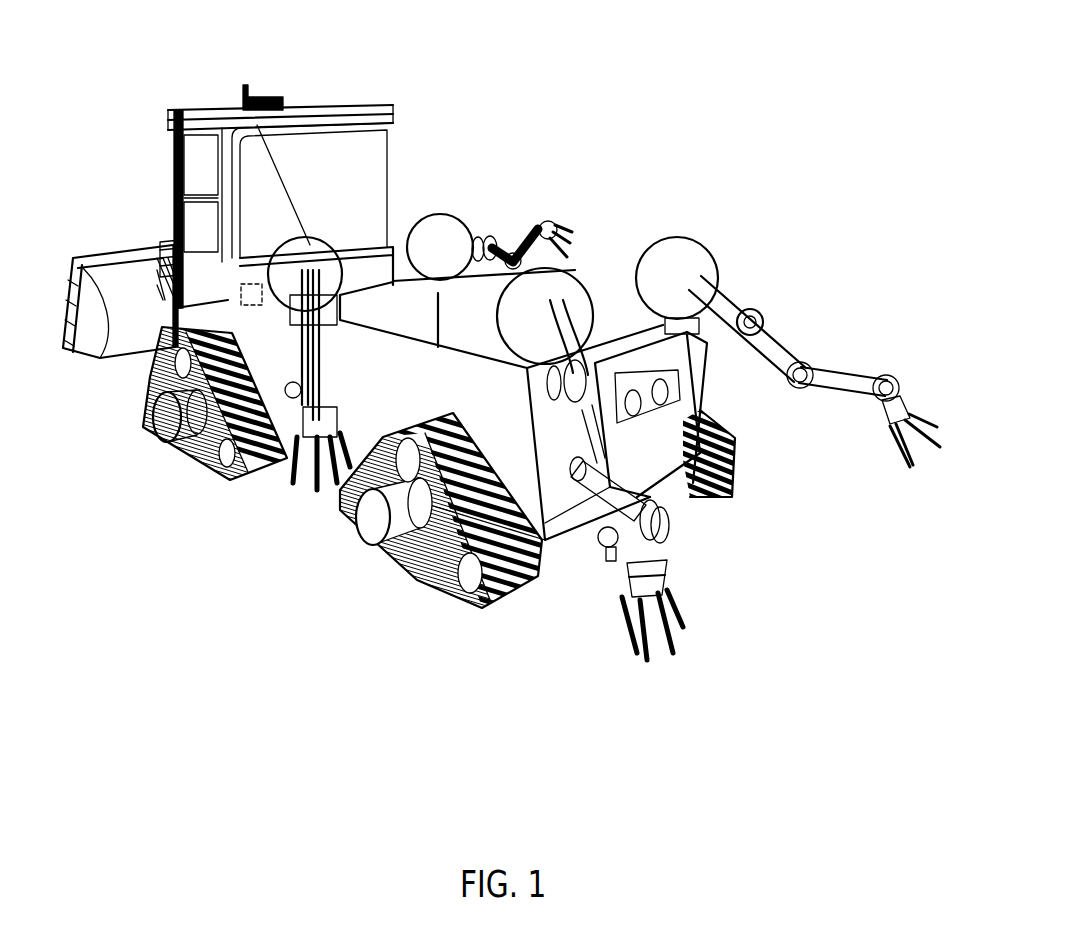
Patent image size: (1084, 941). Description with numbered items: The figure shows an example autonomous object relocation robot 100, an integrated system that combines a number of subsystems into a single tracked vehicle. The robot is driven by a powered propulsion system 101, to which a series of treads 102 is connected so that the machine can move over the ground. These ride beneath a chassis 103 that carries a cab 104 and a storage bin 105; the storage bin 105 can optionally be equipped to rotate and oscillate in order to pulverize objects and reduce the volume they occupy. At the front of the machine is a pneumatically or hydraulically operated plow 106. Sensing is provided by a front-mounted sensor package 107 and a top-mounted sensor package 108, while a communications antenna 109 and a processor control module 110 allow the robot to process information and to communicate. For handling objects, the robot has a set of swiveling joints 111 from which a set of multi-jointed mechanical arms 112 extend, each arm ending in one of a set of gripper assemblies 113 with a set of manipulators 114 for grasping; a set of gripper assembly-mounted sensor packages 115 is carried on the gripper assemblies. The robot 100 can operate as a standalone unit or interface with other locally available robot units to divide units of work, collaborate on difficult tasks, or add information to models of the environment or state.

The autonomous object relocation robot 100 is at (699, 106).
The powered propulsion system 101 is at (170, 432).
The treads 102 is at (260, 477).
The chassis 103 is at (550, 540).
The cab 104 is at (395, 108).
The storage bin 105 is at (604, 308).
The plow 106 is at (103, 245).
The front-mounted sensor package 107 is at (675, 382).
The top-mounted sensor package 108 is at (276, 95).
The communications antenna 109 is at (245, 86).
The processor control module 110 is at (243, 303).
The swiveling joints 111 is at (457, 210).
The multi-jointed mechanical arms 112 is at (787, 320).
The gripper assemblies 113 is at (890, 417).
The manipulators 114 is at (652, 663).
The gripper assembly-mounted sensor packages 115 is at (603, 552).